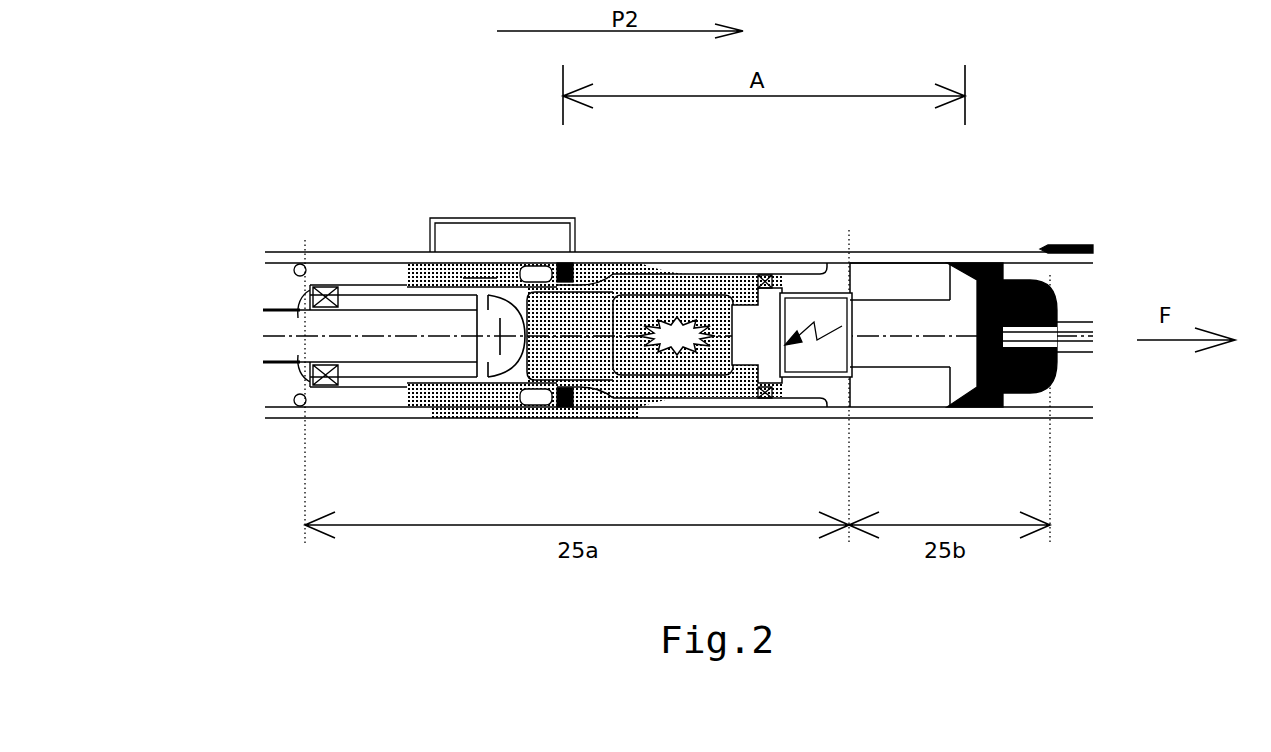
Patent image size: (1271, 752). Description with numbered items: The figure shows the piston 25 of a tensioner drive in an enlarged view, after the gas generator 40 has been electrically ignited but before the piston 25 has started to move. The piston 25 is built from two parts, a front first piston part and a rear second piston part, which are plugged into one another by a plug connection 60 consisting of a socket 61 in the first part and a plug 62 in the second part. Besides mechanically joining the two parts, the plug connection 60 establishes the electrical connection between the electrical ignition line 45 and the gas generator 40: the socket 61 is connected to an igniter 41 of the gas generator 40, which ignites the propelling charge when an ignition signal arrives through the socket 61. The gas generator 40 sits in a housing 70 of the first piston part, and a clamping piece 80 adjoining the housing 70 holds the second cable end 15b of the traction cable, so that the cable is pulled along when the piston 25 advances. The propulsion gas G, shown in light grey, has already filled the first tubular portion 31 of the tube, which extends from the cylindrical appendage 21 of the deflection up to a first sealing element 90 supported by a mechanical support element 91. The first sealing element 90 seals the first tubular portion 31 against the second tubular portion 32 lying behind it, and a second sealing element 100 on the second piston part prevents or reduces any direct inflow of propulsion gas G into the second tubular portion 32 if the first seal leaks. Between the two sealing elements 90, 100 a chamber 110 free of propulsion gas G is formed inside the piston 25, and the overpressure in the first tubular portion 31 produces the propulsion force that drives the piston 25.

The second cable end 15b is at (268, 325).
The cylindrical appendage 21 is at (277, 385).
The piston 25 is at (438, 203).
The first tubular portion 31 is at (450, 398).
The second tubular portion 32 is at (1065, 280).
The gas generator 40 is at (758, 320).
The igniter 41 is at (765, 348).
The electrical ignition line 45 is at (1080, 341).
The plug connection 60 is at (863, 385).
The socket 61 is at (818, 298).
The plug 62 is at (908, 315).
The housing 70 is at (637, 397).
The clamping piece 80 is at (385, 385).
The first sealing element 90 is at (573, 263).
The mechanical support element 91 is at (543, 263).
The second sealing element 100 is at (993, 263).
The chamber 110 is at (888, 277).
The propulsion gas G is at (578, 368).